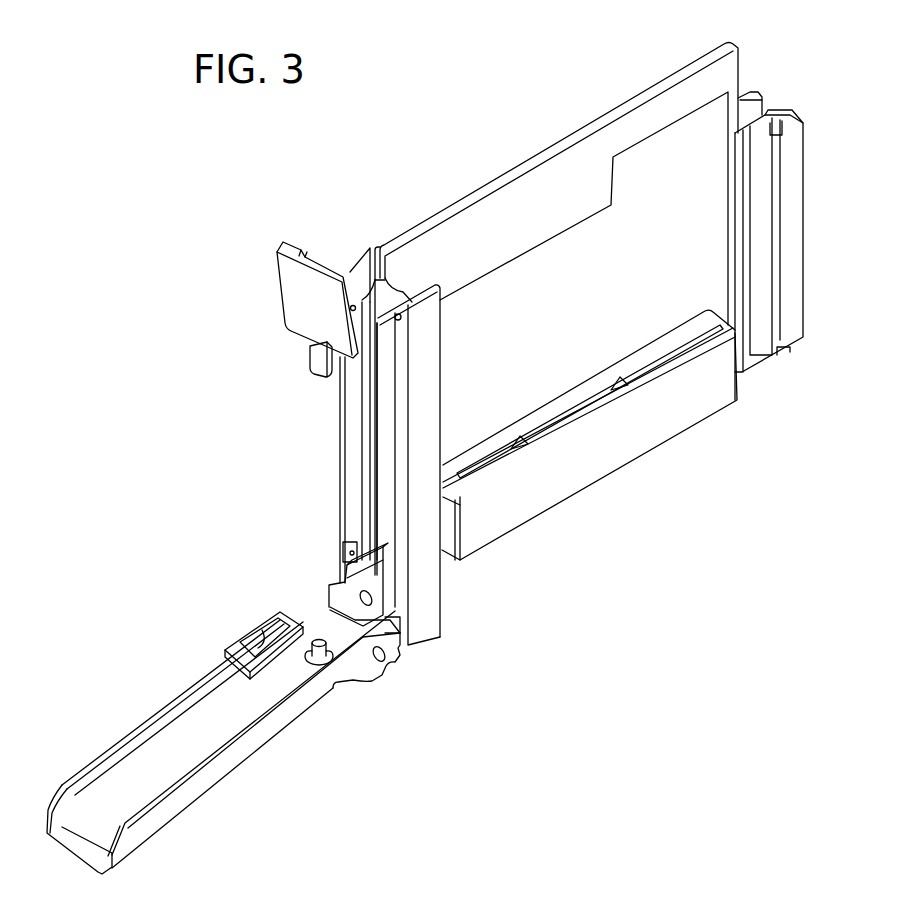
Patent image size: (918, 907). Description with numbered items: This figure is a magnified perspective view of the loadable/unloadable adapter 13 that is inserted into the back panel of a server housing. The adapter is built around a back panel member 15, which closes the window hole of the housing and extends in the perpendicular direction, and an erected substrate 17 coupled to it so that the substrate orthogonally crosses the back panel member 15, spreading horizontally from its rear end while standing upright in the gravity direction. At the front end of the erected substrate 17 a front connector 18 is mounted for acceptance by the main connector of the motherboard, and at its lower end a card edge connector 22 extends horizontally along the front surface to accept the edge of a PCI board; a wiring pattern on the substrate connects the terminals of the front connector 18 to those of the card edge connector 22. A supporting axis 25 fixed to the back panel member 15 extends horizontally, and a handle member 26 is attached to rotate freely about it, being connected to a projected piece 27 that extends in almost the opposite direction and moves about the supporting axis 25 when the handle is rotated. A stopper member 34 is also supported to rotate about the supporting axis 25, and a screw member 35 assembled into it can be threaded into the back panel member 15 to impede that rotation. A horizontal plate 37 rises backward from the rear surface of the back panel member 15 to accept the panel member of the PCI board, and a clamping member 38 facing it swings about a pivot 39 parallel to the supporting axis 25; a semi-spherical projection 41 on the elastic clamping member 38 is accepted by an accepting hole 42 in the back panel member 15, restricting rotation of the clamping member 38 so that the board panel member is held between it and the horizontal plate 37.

The loadable/unloadable adapter 13 is at (396, 186).
The erected substrate 17 is at (606, 112).
The front connector 18 is at (778, 112).
The card edge connector 22 is at (618, 455).
The back panel member 15 is at (435, 378).
The accepting hole 42 is at (402, 318).
The horizontal plate 37 is at (377, 300).
The clamping member 38 is at (283, 265).
The semi-spherical projection 41 is at (350, 310).
The pivot 39 is at (362, 338).
The handle member 26 is at (183, 790).
The stopper member 34 is at (283, 660).
The screw member 35 is at (333, 690).
The supporting axis 25 is at (320, 603).
The projected piece 27 is at (397, 655).